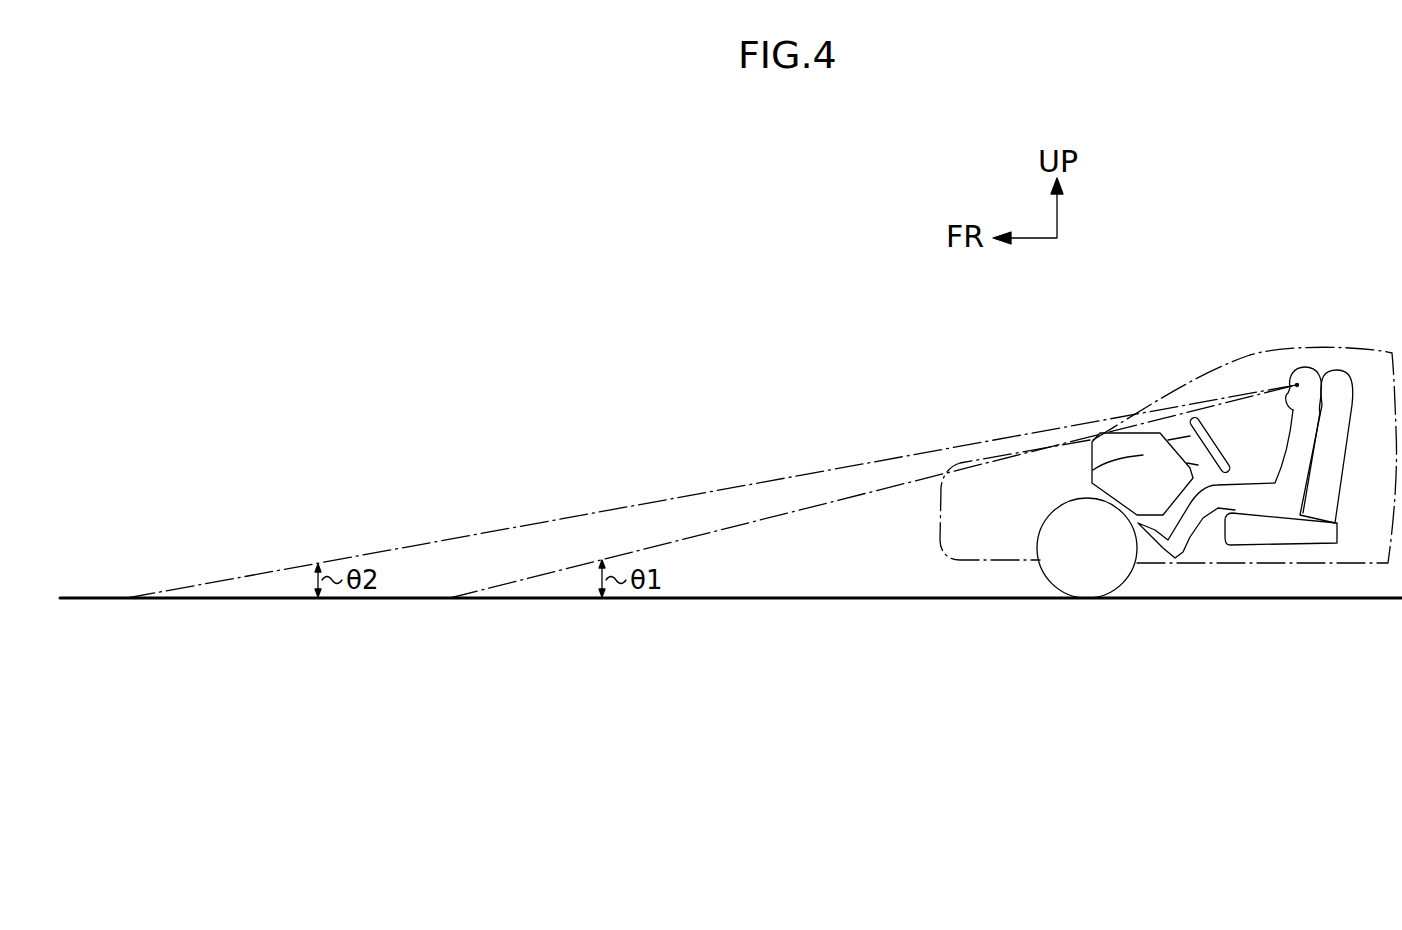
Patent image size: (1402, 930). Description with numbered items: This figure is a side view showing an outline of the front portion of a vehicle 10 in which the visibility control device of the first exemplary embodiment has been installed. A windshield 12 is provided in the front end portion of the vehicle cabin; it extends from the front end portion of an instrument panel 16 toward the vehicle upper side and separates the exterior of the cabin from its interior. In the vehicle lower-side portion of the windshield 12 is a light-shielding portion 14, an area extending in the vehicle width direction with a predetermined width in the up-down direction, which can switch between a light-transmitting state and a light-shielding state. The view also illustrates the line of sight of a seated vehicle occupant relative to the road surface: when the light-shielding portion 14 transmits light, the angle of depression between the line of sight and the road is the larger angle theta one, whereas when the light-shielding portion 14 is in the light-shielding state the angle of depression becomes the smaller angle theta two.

The vehicle 10 is at (1306, 306).
The windshield 12 is at (1187, 370).
The light-shielding portion 14 is at (1110, 425).
The instrument panel 16 is at (1093, 470).